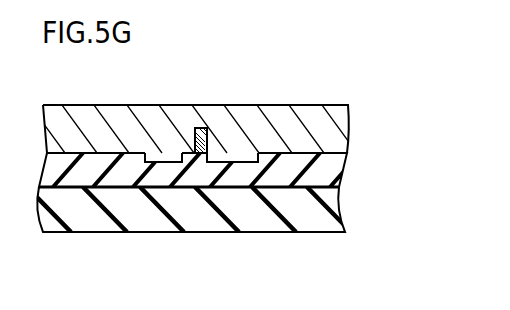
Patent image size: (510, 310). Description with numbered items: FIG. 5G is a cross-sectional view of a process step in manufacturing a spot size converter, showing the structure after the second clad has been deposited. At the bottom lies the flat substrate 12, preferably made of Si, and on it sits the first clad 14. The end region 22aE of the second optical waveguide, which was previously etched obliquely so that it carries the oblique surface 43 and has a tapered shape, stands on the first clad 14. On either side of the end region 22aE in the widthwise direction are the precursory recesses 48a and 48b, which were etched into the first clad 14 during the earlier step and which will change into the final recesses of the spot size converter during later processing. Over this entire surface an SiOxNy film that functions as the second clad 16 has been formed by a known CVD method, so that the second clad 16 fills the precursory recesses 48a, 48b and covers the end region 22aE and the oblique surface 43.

The second clad 16 is at (334, 127).
The first clad 14 is at (336, 164).
The substrate 12 is at (330, 202).
The precursory recess 48a is at (154, 147).
The precursory recess 48b is at (245, 147).
The end region of the second optical waveguide 22aE is at (200, 123).
The oblique surface 43 is at (214, 134).